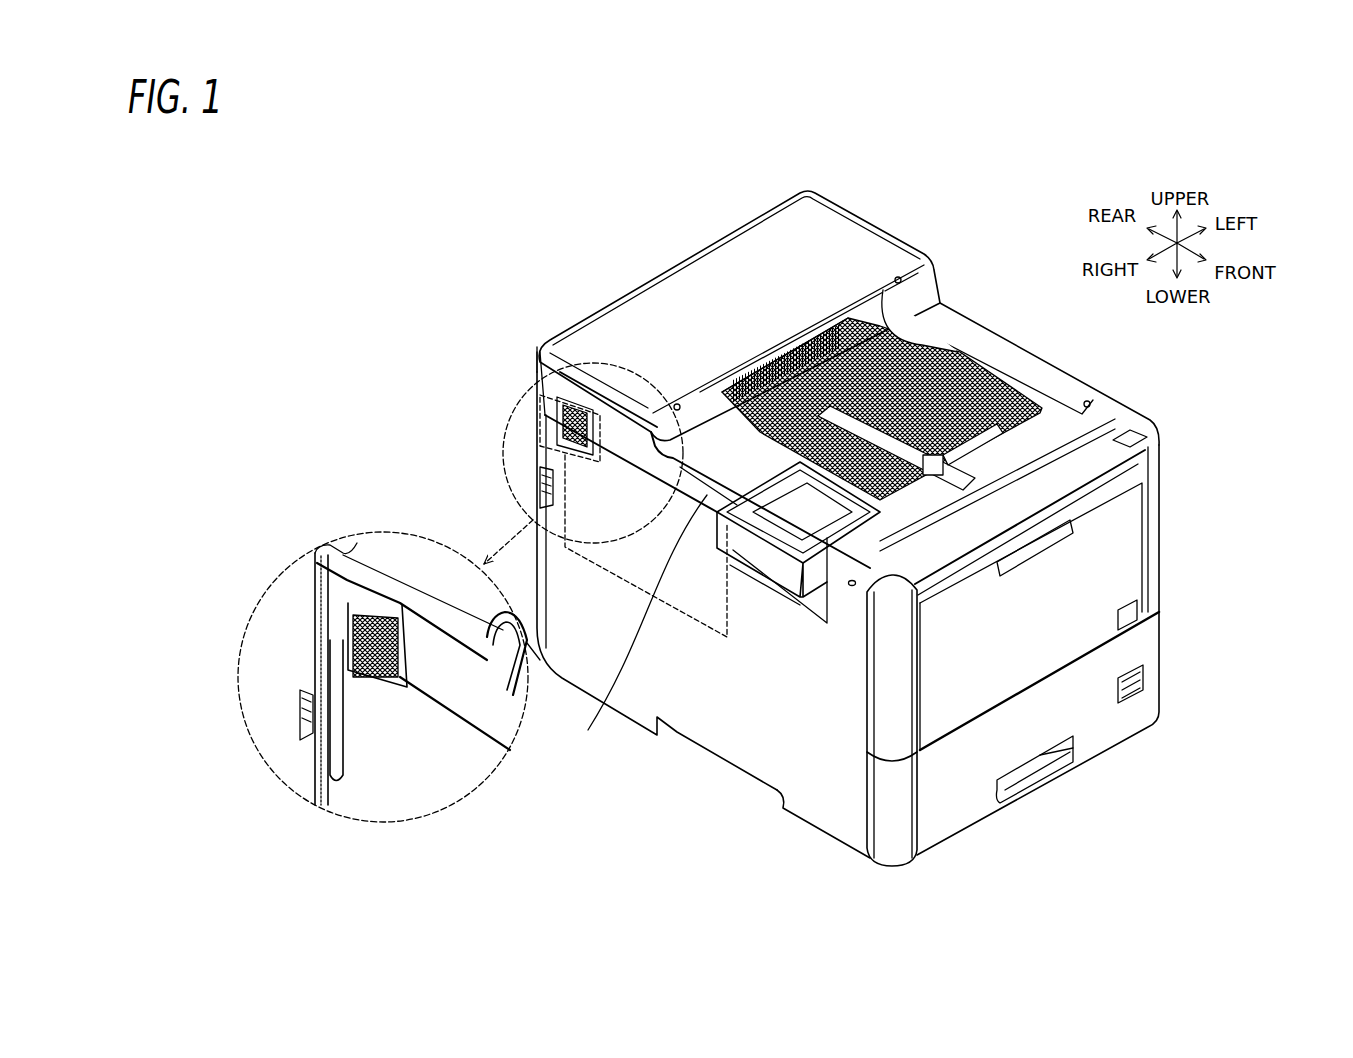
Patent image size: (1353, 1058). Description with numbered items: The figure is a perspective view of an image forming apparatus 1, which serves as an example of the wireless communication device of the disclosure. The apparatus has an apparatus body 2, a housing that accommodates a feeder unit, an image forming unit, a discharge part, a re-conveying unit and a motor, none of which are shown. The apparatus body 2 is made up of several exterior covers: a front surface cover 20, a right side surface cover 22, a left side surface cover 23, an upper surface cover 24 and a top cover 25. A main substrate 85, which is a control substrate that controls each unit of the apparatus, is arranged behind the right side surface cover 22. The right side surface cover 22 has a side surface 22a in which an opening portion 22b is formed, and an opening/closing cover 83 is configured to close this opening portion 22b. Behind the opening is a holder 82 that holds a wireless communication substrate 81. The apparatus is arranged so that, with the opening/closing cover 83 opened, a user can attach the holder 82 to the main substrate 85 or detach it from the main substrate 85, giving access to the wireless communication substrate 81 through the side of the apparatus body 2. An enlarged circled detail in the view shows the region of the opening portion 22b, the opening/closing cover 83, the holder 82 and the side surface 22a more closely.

The image forming apparatus 1 is at (573, 231).
The apparatus body 2 is at (638, 746).
The front surface cover 20 is at (1163, 549).
The right side surface cover 22 is at (718, 715).
The side surface 22a is at (790, 808).
The opening portion 22b is at (548, 352).
The left side surface cover 23 is at (1022, 342).
The upper surface cover 24 is at (463, 690).
The top cover 25 is at (720, 268).
The wireless communication substrate 81 is at (545, 437).
The holder 82 is at (345, 646).
The opening/closing cover 83 is at (558, 420).
The main substrate 85 is at (560, 470).